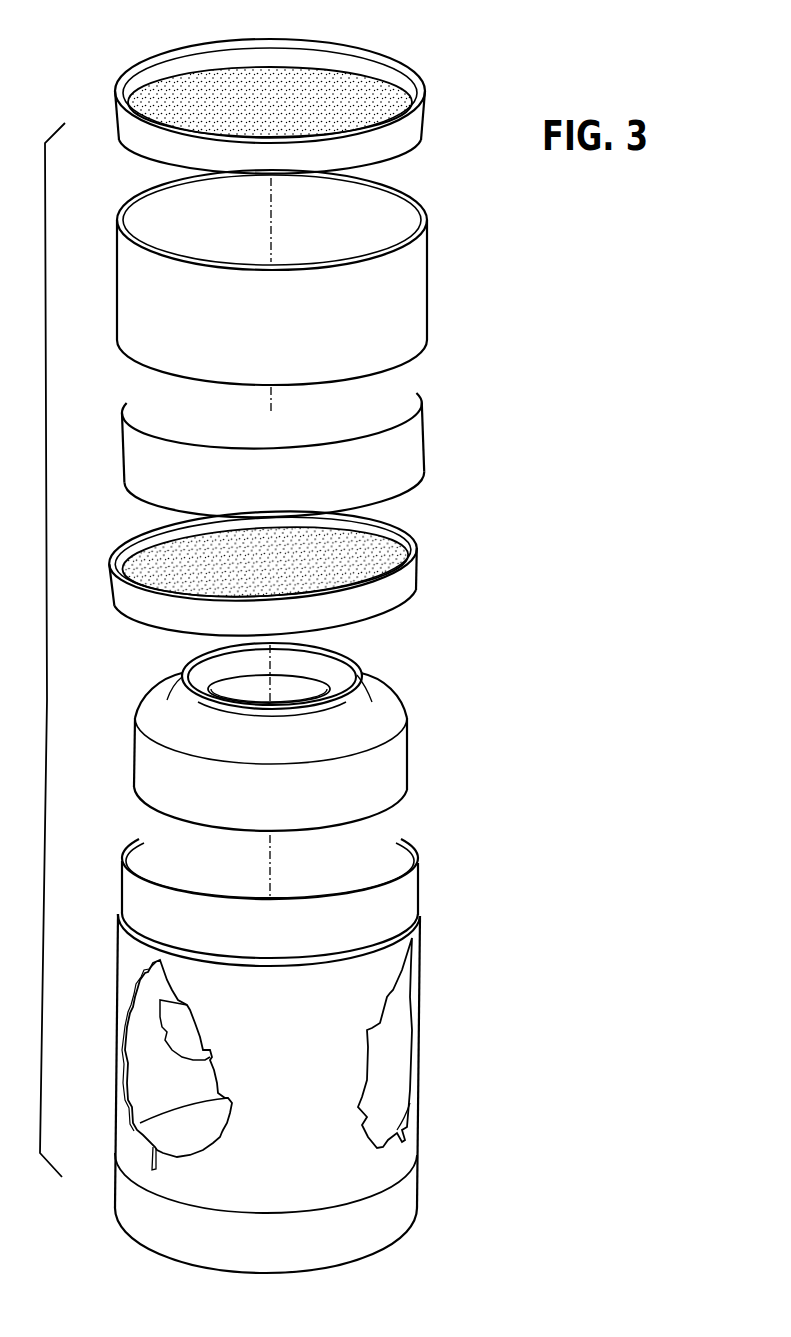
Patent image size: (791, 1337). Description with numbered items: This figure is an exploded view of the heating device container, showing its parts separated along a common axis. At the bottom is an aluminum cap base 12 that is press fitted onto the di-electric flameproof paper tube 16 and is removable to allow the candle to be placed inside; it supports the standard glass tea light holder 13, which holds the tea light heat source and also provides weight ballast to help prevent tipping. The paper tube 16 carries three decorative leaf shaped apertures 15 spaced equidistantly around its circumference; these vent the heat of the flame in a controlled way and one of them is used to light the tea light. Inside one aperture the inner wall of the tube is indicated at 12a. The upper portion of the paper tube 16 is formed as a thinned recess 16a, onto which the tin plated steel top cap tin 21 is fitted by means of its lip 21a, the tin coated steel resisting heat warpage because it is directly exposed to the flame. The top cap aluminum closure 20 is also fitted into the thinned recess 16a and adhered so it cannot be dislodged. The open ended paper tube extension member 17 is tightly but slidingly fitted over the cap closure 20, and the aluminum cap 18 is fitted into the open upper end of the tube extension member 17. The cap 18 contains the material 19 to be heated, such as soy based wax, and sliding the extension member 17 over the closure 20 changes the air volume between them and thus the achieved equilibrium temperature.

The cap base 12 is at (273, 1054).
The inner liner of container 12a is at (184, 1118).
The glass tea light holder 13 is at (400, 762).
The leaf shaped apertures 15 is at (183, 1023).
The paper tube 16 is at (318, 1046).
The thinned recess 16a is at (270, 898).
The tube extension member 17 is at (420, 290).
The cap 18 is at (413, 125).
The material 19 is at (367, 85).
The top cap aluminum closure 20 is at (418, 452).
The top cap tin 21 is at (264, 573).
The lip 21a is at (210, 603).